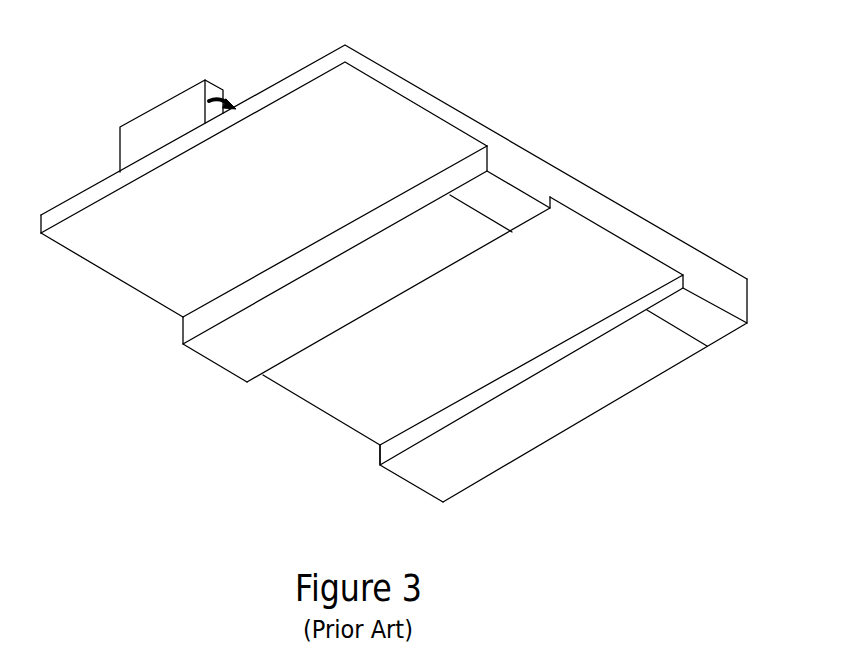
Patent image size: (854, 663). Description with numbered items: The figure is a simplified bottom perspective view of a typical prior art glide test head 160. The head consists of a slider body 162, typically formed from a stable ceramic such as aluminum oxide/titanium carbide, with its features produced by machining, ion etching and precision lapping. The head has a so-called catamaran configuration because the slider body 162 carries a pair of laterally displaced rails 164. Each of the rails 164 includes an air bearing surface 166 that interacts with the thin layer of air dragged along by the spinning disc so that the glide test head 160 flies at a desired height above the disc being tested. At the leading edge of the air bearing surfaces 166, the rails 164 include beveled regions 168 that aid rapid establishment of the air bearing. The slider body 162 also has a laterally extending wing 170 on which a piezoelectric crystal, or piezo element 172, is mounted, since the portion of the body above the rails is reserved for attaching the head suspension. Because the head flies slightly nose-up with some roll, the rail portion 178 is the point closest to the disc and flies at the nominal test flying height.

The glide test head 160 is at (655, 160).
The slider body 162 is at (528, 163).
The rails 164 is at (262, 288).
The air bearing surfaces 166 is at (295, 323).
The beveled regions 168 is at (491, 194).
The wing 170 is at (347, 121).
The piezo element 172 is at (157, 127).
The closest rail portion 178 is at (218, 345).